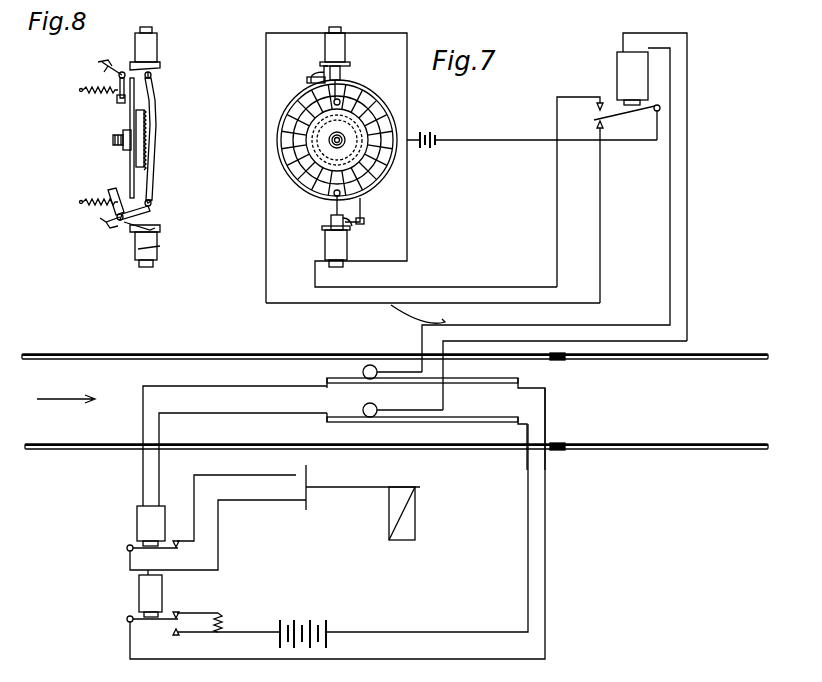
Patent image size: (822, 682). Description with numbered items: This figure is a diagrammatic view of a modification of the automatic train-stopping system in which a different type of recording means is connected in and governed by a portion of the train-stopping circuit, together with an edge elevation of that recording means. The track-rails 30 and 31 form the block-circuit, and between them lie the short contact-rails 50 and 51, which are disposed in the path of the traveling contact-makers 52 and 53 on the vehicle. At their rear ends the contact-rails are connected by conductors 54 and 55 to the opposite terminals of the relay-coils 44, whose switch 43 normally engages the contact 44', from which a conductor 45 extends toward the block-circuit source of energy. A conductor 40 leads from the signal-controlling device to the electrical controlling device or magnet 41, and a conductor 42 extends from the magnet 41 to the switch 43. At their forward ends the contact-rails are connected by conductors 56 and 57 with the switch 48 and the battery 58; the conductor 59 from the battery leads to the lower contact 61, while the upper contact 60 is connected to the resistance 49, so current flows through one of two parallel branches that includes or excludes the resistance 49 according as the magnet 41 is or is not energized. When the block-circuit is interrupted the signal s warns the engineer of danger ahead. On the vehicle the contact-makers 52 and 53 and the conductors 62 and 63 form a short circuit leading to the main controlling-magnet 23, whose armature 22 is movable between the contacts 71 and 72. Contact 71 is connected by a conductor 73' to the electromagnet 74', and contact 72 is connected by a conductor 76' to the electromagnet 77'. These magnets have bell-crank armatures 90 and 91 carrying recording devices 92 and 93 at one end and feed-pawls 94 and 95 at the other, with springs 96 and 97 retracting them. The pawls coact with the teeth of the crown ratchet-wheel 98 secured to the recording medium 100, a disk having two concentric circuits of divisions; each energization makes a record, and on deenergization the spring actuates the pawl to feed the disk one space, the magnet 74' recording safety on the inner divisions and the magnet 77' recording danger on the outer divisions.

In FIG. 8, the armature 90 is at (142, 72).
In FIG. 8, the armature 91 is at (152, 212).
In FIG. 8, the recording device 92 is at (124, 102).
In FIG. 8, the recording device 93 is at (112, 190).
In FIG. 8, the feed-pawl 94 is at (157, 125).
In FIG. 8, the feed-pawl 95 is at (154, 170).
In FIG. 8, the spring 96 is at (98, 87).
In FIG. 8, the spring 97 is at (92, 204).
In FIG. 8, the crown ratchet-wheel 98 is at (146, 142).
In FIG. 7, the recording medium 100 is at (305, 193).
In FIG. 7, the electromagnet 74' is at (346, 55).
In FIG. 7, the electromagnet 77' is at (353, 231).
In FIG. 7, the conductor 76' is at (561, 192).
In FIG. 7, the conductor 73' is at (613, 215).
In FIG. 7, the contact 71 is at (596, 124).
In FIG. 7, the contact 72 is at (600, 101).
In FIG. 7, the armature 22 is at (624, 113).
In FIG. 7, the main controlling-magnet 23 is at (652, 187).
In FIG. 7, the conductor 62 is at (546, 210).
In FIG. 7, the conductor 63 is at (652, 343).
In FIG. 7, the track-rail 30 is at (702, 353).
In FIG. 7, the track-rail 31 is at (640, 450).
In FIG. 7, the contact-rail 50 is at (512, 383).
In FIG. 7, the contact-rail 51 is at (455, 417).
In FIG. 7, the traveling contact-maker 52 is at (363, 372).
In FIG. 7, the traveling contact-maker 53 is at (363, 410).
In FIG. 7, the conductor 54 is at (235, 438).
In FIG. 7, the conductor 55 is at (243, 452).
In FIG. 7, the relay-coils 44 is at (151, 526).
In FIG. 7, the contact 44' is at (181, 530).
In FIG. 7, the switch 43 is at (160, 549).
In FIG. 7, the conductor 45 is at (236, 498).
In FIG. 7, the conductor 42 is at (128, 568).
In FIG. 7, the conductor 40 is at (331, 493).
In FIG. 7, the electrical controlling device 41 is at (150, 593).
In FIG. 7, the switch 48 is at (146, 621).
In FIG. 7, the contact 60 is at (179, 613).
In FIG. 7, the contact 61 is at (185, 642).
In FIG. 7, the resistance 49 is at (223, 620).
In FIG. 7, the conductor 59 is at (229, 642).
In FIG. 7, the battery 58 is at (303, 623).
In FIG. 7, the conductor 57 is at (427, 530).
In FIG. 7, the conductor 56 is at (337, 535).
In FIG. 7, the signal s is at (409, 513).